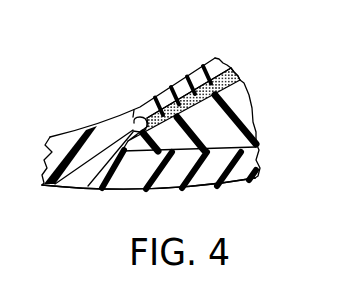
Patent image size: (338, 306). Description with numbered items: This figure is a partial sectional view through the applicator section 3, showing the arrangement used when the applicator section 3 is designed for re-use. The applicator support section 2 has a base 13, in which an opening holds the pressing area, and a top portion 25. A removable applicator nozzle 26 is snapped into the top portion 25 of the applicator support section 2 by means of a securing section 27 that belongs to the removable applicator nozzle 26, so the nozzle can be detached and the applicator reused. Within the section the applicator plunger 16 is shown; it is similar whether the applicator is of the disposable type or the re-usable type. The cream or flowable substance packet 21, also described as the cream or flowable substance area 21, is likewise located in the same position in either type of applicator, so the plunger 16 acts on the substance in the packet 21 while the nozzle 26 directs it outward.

The applicator support section 2 is at (85, 193).
The applicator section 3 is at (207, 50).
The base 13 is at (228, 185).
The applicator plunger 16 is at (253, 125).
The cream or flowable substance packet 21 is at (242, 79).
The top portion 25 is at (108, 125).
The removable applicator nozzle 26 is at (177, 106).
The securing section 27 is at (146, 116).